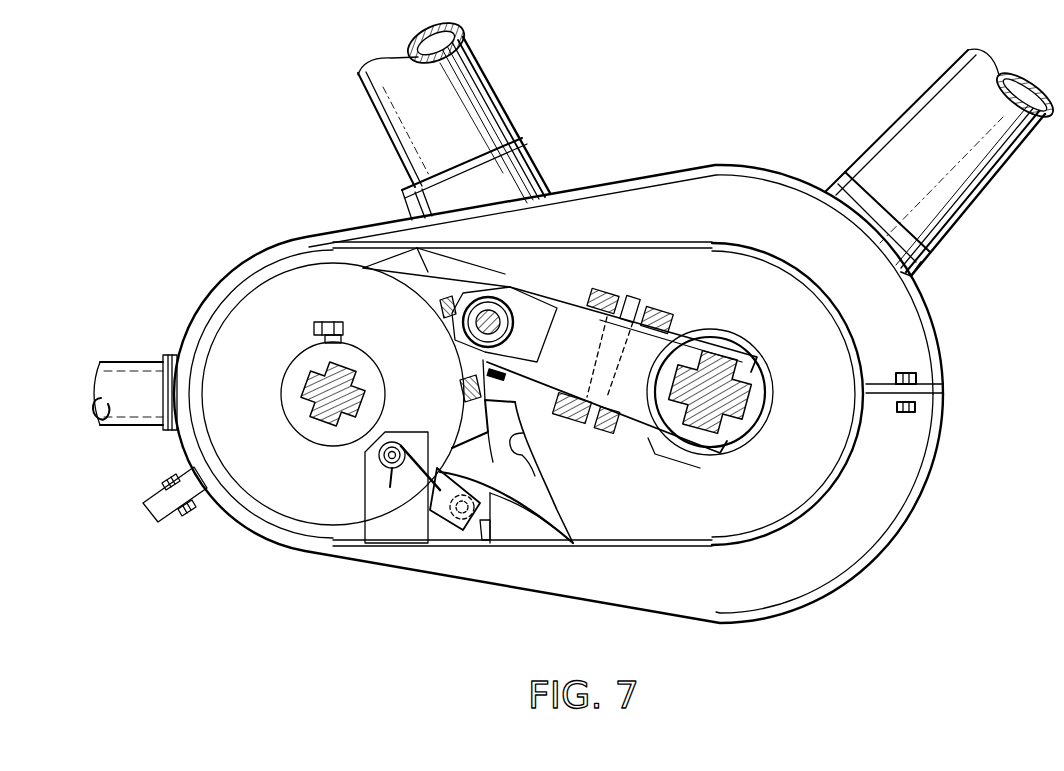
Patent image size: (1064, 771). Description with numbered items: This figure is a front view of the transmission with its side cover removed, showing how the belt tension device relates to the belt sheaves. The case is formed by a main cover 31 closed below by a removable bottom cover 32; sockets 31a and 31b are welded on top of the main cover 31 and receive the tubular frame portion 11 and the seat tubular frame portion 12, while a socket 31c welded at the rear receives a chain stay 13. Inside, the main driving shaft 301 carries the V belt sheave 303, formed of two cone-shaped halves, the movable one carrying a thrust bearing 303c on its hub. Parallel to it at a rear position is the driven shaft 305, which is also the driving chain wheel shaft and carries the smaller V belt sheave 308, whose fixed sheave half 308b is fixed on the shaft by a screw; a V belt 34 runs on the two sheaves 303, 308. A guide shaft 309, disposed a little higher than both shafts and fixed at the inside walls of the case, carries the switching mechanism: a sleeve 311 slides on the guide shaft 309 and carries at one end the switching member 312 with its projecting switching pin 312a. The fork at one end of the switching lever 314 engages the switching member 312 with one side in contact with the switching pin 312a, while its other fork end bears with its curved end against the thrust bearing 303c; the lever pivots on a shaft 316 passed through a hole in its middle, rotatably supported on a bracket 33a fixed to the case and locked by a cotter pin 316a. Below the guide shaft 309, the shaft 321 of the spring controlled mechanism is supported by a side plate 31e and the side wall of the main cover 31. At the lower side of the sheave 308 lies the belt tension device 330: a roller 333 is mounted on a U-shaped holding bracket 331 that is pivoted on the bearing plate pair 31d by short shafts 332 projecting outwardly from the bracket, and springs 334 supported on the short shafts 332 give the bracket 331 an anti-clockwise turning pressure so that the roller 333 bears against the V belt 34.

The tubular frame portion 11 is at (970, 128).
The seat tubular frame portion 12 is at (446, 99).
The chain stay 13 is at (134, 378).
The main cover 31 is at (644, 186).
The socket 31a is at (838, 184).
The socket 31b is at (534, 157).
The socket 31c is at (170, 352).
The bearing plate pair 31d is at (357, 583).
The side plate 31e is at (510, 466).
The bottom cover 32 is at (636, 598).
The bracket 33a is at (608, 421).
The belt 34 is at (450, 274).
The main driving shaft 301 is at (742, 395).
The V belt sheave 303 is at (723, 308).
The thrust bearing 303c is at (758, 420).
The driven shaft 305 is at (360, 393).
The V belt sheave 308 is at (247, 360).
The fixed sheave half 308b is at (330, 321).
The guide shaft 309 is at (520, 360).
The sleeve 311 is at (482, 340).
The switching member 312 is at (523, 328).
The switching pin 312a is at (534, 276).
The switching lever 314 is at (672, 428).
The shaft 316 is at (638, 304).
The cotter pin 316a is at (603, 292).
The shaft 321 is at (537, 444).
The belt tension device 330 is at (355, 528).
The U-shaped holding bracket 331 is at (448, 528).
The short shaft 332 is at (378, 457).
The roller 333 is at (477, 523).
The spring 334 is at (414, 470).